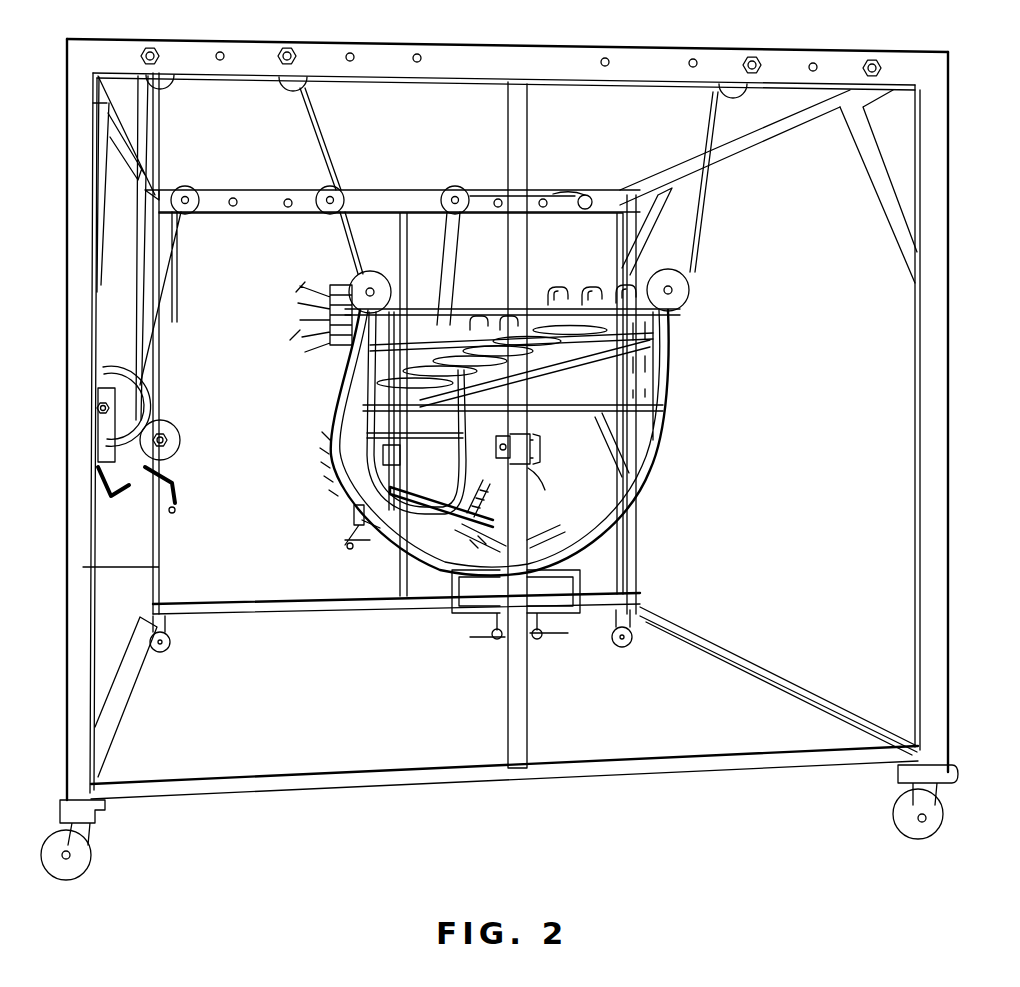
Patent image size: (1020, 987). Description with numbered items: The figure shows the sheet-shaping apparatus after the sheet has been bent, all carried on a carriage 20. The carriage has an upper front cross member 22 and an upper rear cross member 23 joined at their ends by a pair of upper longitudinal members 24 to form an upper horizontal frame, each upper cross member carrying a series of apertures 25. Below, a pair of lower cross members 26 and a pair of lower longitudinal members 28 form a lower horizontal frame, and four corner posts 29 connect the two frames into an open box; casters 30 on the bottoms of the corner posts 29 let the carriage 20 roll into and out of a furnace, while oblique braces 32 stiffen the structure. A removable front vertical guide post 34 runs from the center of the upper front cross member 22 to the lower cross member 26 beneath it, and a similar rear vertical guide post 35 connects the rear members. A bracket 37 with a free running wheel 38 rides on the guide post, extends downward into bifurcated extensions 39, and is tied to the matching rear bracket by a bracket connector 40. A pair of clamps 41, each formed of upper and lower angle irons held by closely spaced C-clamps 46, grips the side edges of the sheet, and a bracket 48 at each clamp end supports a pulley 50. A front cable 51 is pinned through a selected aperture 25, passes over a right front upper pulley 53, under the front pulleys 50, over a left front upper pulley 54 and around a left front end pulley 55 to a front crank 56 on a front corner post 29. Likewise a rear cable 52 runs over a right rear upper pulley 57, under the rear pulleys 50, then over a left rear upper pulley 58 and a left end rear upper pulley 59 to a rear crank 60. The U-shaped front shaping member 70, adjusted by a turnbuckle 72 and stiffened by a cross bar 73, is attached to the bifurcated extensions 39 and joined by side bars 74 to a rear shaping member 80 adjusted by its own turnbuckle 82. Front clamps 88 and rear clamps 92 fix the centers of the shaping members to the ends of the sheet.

The carriage 20 is at (595, 811).
The upper front cross member 22 is at (432, 46).
The upper rear cross member 23 is at (385, 195).
The upper longitudinal members 24 is at (118, 137).
The apertures 25 is at (609, 62).
The lower cross members 26 is at (285, 612).
The lower longitudinal members 28 is at (120, 702).
The corner posts 29 is at (160, 586).
The casters 30 is at (170, 642).
The oblique braces 32 is at (110, 205).
The front vertical guide post 34 is at (527, 730).
The rear vertical guide post 35 is at (395, 585).
The bracket 37 is at (400, 490).
The free running wheel 38 is at (530, 442).
The bifurcated extensions 39 is at (352, 498).
The bracket connector 40 is at (472, 488).
The clamps 41 is at (301, 282).
The C-clamps 46 is at (585, 285).
The bracket 48 is at (690, 309).
The pulleys 50 is at (352, 278).
The front cable 51 is at (323, 120).
The rear cable 52 is at (553, 192).
The right front upper pulley 53 is at (738, 100).
The left front upper pulley 54 is at (291, 92).
The left front end pulley 55 is at (163, 92).
The front crank 56 is at (132, 392).
The right rear upper pulley 57 is at (452, 188).
The left rear upper pulley 58 is at (323, 190).
The left end rear upper pulley 59 is at (186, 186).
The rear crank 60 is at (181, 440).
The front shaping member 70 is at (609, 495).
The turnbuckle 72 is at (548, 350).
The cross bar 73 is at (598, 400).
The side bars 74 is at (467, 418).
The rear shaping member 80 is at (448, 469).
The turnbuckle 82 is at (400, 425).
The front clamps 88 is at (466, 633).
The rear clamps 92 is at (339, 531).